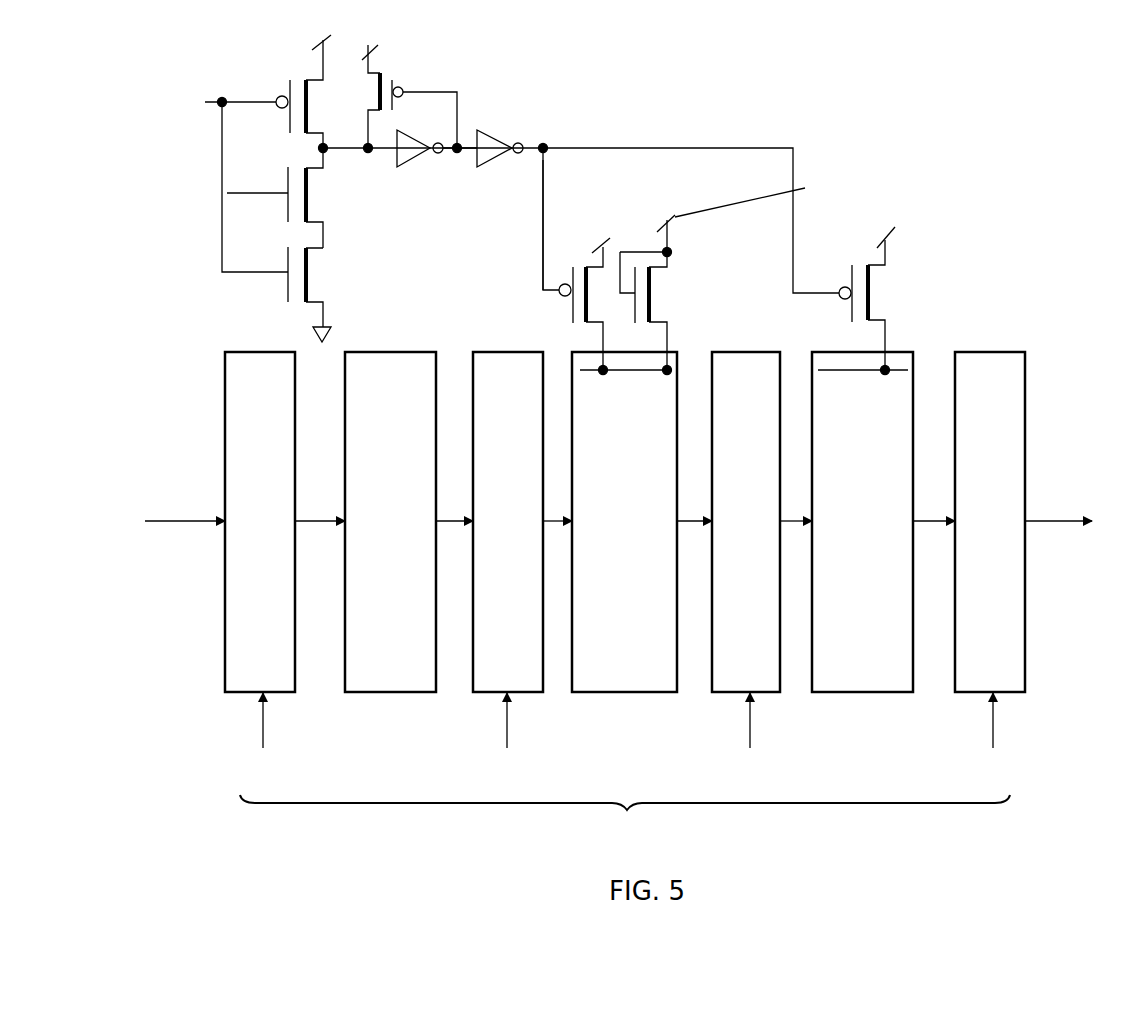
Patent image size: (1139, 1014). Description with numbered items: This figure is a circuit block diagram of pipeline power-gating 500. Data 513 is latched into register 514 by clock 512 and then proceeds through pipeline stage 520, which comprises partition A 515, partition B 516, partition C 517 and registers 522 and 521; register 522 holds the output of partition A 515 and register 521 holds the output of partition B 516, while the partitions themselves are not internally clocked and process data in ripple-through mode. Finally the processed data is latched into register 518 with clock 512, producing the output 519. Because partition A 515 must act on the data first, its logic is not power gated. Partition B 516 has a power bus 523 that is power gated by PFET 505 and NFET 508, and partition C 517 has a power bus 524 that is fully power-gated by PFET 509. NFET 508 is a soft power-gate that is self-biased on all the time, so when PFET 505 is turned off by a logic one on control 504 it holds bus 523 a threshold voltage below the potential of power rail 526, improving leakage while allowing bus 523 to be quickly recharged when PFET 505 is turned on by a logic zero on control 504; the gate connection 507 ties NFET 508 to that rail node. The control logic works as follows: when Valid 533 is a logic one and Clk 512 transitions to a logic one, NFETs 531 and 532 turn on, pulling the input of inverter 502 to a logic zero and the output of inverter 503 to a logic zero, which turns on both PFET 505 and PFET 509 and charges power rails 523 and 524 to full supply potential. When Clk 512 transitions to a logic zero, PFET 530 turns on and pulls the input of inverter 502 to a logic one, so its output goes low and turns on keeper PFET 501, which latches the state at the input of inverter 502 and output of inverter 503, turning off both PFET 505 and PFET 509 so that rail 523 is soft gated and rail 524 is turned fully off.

The pipeline power-gating 500 is at (832, 141).
The keeper PFET 501 is at (382, 73).
The inverter 502 is at (410, 155).
The inverter 503 is at (495, 132).
The control 504 is at (538, 203).
The PFET 505 is at (566, 305).
The gate connection 507 is at (630, 250).
The NFET 508 is at (652, 308).
The PFET 509 is at (873, 302).
The clock 512 is at (238, 105).
The data 513 is at (173, 522).
The register 514 is at (260, 522).
The partition A 515 is at (390, 522).
The partition B 516 is at (624, 522).
The partition C 517 is at (862, 522).
The register 518 is at (990, 522).
The output 519 is at (1055, 522).
The pipeline stage 520 is at (547, 805).
The register 521 is at (746, 522).
The register 522 is at (508, 522).
The power bus 523 is at (617, 375).
The power bus 524 is at (861, 377).
The power rail 526 is at (885, 237).
The PFET 530 is at (288, 92).
The NFET 531 is at (313, 193).
The NFET 532 is at (320, 280).
The Valid 533 is at (240, 194).